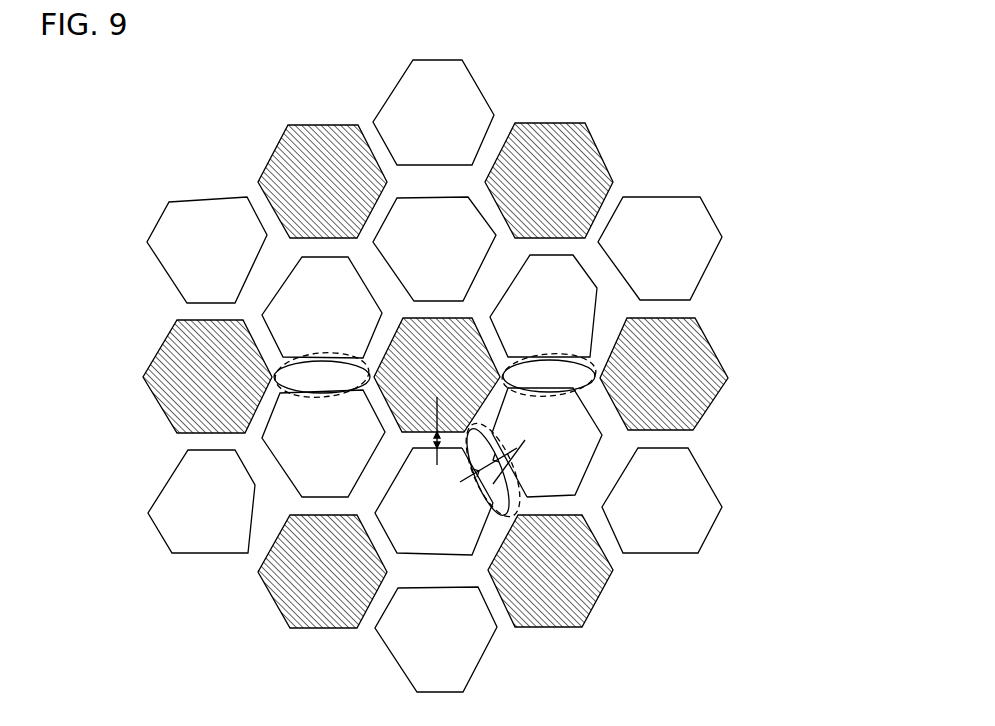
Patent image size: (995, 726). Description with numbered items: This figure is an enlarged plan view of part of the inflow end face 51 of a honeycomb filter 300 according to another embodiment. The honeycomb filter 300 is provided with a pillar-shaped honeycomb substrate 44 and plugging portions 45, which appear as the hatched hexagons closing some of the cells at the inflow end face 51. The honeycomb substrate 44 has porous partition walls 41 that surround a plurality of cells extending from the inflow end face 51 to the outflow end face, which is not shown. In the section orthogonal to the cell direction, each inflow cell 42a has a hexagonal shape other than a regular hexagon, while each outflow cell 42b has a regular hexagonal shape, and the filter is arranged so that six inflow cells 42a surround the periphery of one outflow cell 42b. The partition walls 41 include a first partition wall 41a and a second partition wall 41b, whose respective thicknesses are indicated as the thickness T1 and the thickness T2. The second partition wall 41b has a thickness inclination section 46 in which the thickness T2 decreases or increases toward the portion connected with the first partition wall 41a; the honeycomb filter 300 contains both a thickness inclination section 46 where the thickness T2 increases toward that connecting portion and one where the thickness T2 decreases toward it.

The honeycomb filter 300 is at (777, 57).
The inflow end face 51 is at (214, 160).
The honeycomb substrate 44 is at (690, 190).
The partition walls 41 is at (475, 307).
The first partition wall 41a is at (425, 439).
The second partition wall 41b is at (505, 482).
The inflow cells 42a is at (460, 482).
The outflow cell 42b is at (555, 373).
The plugging portions 45 is at (415, 347).
The thickness inclination section 46 is at (433, 370).
The thickness of the first partition wall T1 is at (437, 455).
The thickness of the second partition wall T2 is at (505, 462).